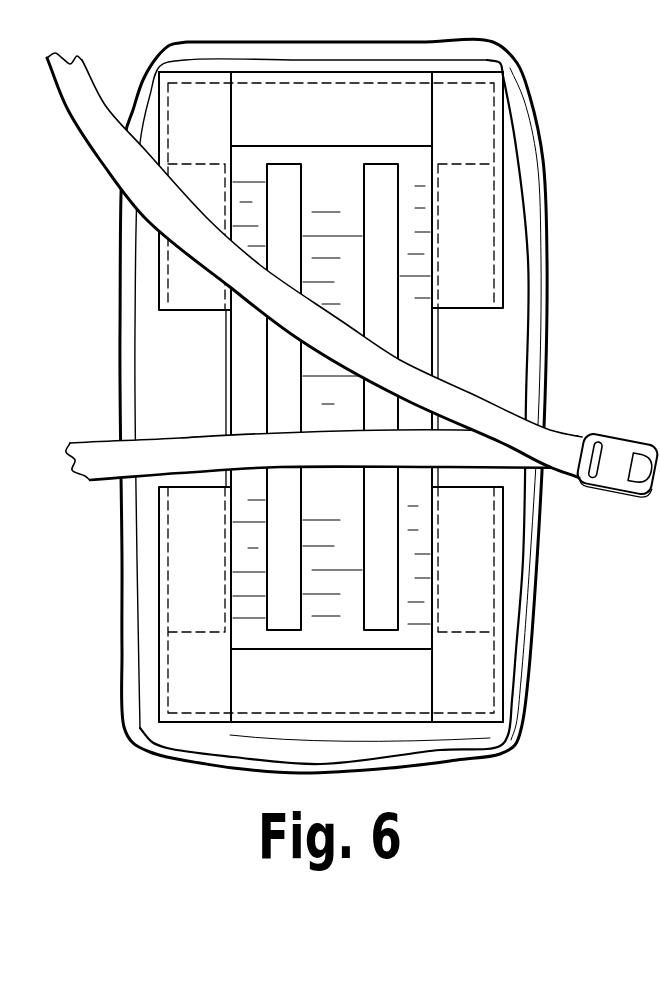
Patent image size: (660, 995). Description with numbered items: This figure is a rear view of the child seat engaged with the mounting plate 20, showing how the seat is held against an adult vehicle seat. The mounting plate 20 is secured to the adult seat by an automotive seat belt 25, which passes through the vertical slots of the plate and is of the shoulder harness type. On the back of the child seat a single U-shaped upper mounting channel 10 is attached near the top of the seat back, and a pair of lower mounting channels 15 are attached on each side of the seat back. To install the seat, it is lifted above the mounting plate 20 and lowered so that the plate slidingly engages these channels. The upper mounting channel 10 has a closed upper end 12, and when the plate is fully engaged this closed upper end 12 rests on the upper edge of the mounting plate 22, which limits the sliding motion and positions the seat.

The upper mounting channel 10 is at (503, 237).
The closed upper end 12 is at (200, 68).
The lower mounting channels 15 is at (160, 608).
The mounting plate 20 is at (227, 352).
The upper edge of the mounting plate 22 is at (455, 83).
The seat belt 25 is at (570, 434).